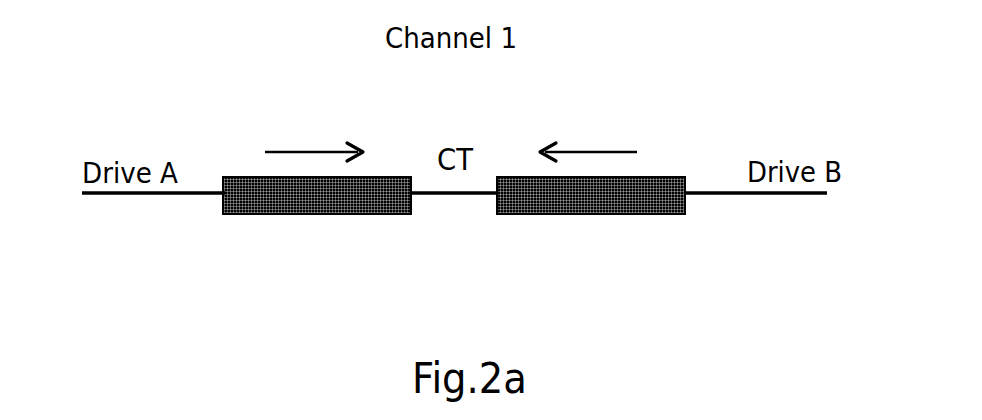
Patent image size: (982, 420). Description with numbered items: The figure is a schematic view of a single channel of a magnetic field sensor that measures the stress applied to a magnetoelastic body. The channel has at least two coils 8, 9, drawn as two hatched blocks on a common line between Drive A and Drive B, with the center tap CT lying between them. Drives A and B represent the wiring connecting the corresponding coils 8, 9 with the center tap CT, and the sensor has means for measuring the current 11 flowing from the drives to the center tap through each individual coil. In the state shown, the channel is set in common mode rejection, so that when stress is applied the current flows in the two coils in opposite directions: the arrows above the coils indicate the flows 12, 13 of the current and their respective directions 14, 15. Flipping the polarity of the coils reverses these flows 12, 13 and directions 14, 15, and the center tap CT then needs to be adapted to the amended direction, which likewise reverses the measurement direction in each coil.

The coil 8 is at (637, 214).
The coil 9 is at (337, 214).
The current 11 is at (186, 193).
The flow of the current 12 is at (309, 102).
The direction of the flow 14 is at (337, 148).
The flow of the current 13 is at (611, 102).
The direction of the flow 15 is at (595, 150).